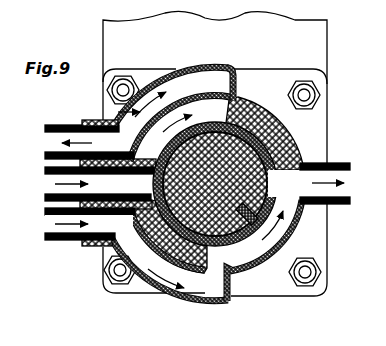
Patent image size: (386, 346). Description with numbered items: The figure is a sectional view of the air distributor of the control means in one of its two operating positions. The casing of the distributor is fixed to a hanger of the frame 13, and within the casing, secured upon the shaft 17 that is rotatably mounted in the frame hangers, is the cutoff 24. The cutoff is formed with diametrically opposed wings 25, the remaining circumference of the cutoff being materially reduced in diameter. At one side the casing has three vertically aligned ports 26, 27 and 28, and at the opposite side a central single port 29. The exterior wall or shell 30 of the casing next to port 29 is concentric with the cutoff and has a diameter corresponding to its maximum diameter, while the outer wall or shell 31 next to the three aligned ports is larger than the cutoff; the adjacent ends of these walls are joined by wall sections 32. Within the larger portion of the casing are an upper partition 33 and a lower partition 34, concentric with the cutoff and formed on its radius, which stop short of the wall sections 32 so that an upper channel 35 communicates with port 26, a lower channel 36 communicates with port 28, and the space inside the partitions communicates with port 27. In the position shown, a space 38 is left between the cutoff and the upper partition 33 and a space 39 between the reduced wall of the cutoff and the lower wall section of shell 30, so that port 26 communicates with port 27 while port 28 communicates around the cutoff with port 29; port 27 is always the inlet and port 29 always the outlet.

The frame 13 is at (327, 52).
The shaft 17 is at (215, 184).
The cutoff 24 is at (260, 216).
The wings 25 is at (270, 140).
The port 26 is at (45, 137).
The port 27 is at (45, 178).
The port 28 is at (45, 218).
The port 29 is at (352, 178).
The wall or shell 30 is at (286, 127).
The outer wall or shell 31 is at (203, 64).
The wall sections 32 is at (236, 81).
The partition 33 is at (143, 112).
The partition 34 is at (140, 240).
The upper channel 35 is at (118, 112).
The lower channel 36 is at (130, 248).
The space 38 is at (172, 116).
The space 39 is at (262, 241).